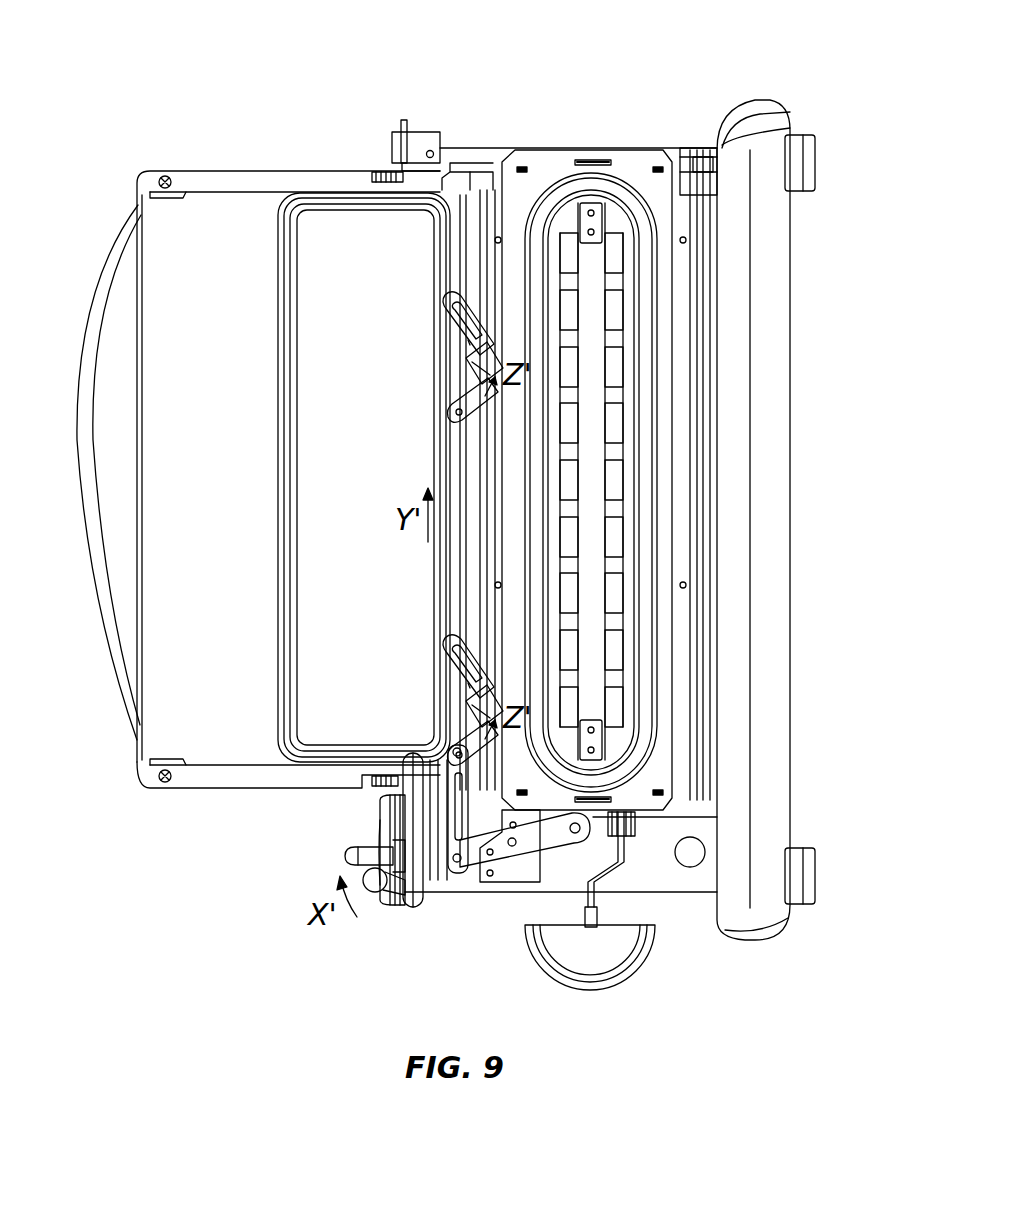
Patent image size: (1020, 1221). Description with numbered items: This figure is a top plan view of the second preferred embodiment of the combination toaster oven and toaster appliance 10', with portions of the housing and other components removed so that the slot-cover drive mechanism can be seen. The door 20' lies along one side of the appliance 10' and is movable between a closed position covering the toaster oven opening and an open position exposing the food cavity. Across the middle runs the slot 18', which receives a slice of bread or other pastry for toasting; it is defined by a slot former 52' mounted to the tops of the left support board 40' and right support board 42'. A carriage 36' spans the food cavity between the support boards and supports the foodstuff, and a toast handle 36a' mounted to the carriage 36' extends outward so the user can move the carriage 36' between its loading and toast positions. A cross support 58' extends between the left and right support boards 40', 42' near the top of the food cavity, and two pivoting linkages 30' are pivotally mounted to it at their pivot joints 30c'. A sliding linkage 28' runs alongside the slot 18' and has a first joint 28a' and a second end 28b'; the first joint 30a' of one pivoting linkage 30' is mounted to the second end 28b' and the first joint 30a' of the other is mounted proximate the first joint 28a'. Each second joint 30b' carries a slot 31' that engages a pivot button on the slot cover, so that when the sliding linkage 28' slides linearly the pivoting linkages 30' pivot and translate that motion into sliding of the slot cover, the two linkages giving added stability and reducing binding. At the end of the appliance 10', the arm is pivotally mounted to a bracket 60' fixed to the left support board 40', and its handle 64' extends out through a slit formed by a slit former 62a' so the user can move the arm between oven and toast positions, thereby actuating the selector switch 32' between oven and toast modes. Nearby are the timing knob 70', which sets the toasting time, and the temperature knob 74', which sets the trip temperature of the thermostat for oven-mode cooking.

The combination toaster oven and toaster appliance 10' is at (778, 35).
The door 20' is at (244, 479).
The sliding linkage 28' is at (364, 477).
The first joint of the sliding linkage 28a' is at (460, 855).
The second end of the sliding linkage 28b' is at (402, 492).
The pivoting linkage 30' is at (413, 511).
The first joint 30a' is at (418, 571).
The second joint 30b' is at (416, 475).
The pivot joint 30c' is at (420, 535).
The slot 31' is at (417, 486).
The selector switch 32' is at (509, 907).
The carriage 36' is at (639, 547).
The toast handle 36a' is at (638, 901).
The left support board 40' is at (791, 520).
The right support board 42' is at (438, 133).
The slot former 52' is at (699, 482).
The cross support 58' is at (578, 457).
The bracket 60' is at (525, 852).
The slit former 62a' is at (413, 881).
The handle 64' is at (375, 926).
The timing knob 70' is at (324, 870).
The temperature knob 74' is at (346, 841).
The slot 18' is at (717, 481).